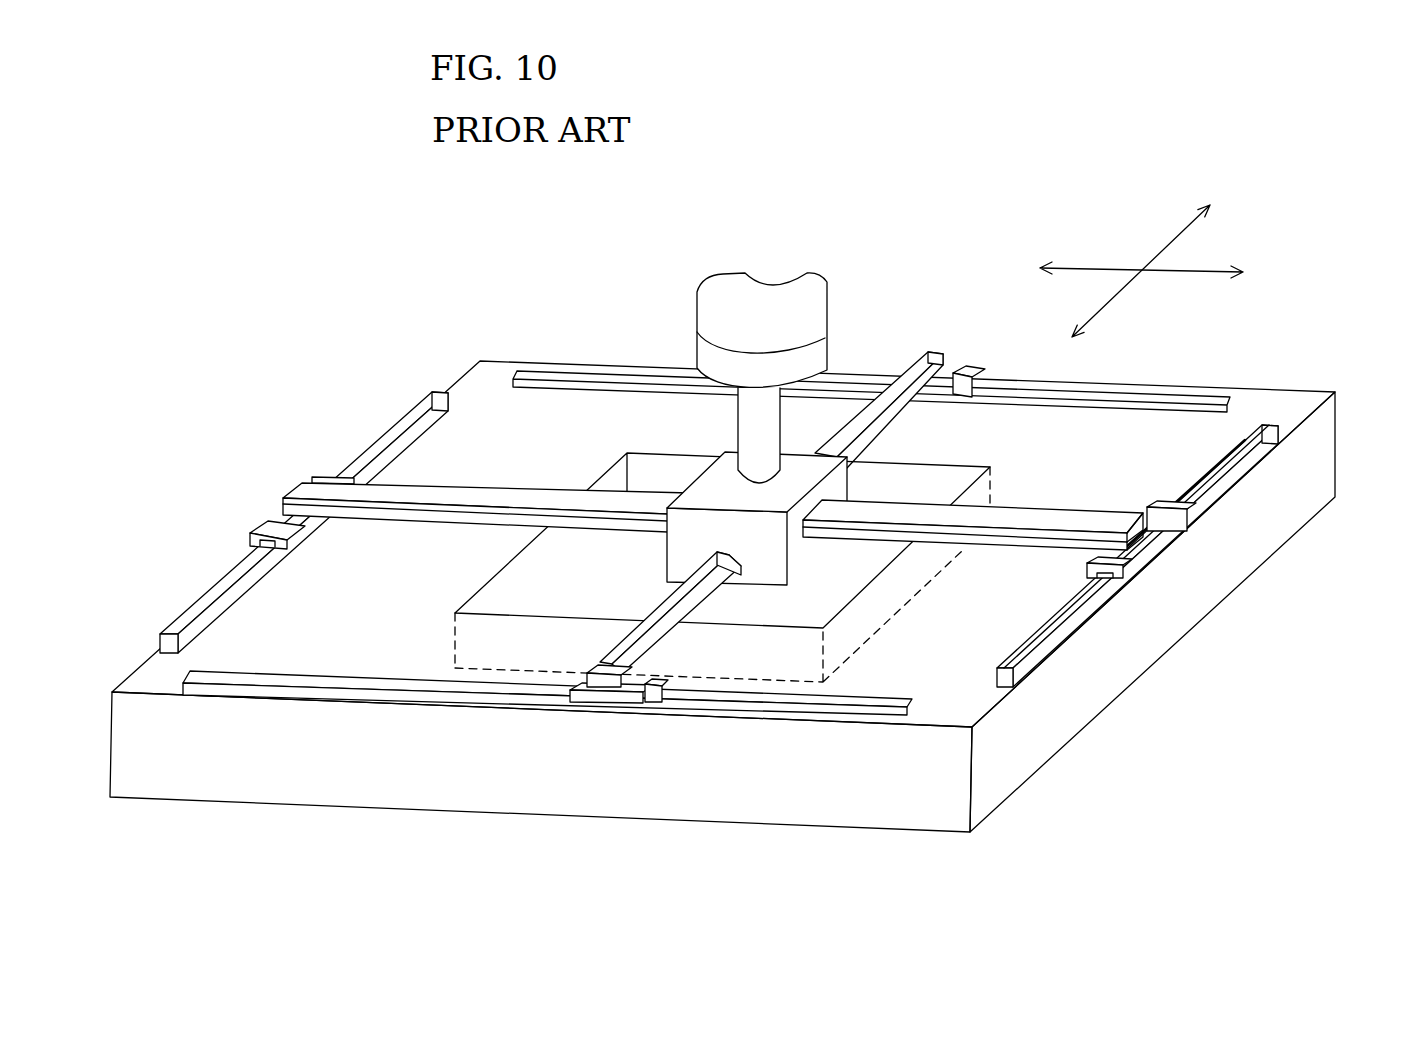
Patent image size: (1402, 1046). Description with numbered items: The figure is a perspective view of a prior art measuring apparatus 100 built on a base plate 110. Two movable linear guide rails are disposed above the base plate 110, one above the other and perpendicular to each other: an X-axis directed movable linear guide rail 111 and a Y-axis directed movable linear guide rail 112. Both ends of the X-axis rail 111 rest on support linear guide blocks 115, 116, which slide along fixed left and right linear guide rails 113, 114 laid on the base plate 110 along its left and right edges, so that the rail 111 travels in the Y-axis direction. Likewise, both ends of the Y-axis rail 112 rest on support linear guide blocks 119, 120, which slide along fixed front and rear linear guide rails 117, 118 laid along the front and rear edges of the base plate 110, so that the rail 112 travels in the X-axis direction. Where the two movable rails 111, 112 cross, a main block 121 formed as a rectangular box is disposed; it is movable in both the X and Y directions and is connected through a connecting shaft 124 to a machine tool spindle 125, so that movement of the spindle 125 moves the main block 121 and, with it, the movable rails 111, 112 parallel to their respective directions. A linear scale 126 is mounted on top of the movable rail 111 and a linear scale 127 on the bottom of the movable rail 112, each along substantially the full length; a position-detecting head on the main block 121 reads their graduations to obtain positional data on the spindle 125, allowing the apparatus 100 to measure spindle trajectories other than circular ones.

The measuring apparatus 100 is at (362, 263).
The base plate 110 is at (400, 768).
The X-axis directed movable linear guide rail 111 is at (1066, 545).
The Y-axis directed movable linear guide rail 112 is at (603, 650).
The fixed left linear guide rail 113 is at (212, 592).
The fixed right linear guide rail 114 is at (1023, 652).
The support linear guide block 115 is at (270, 523).
The support linear guide block 116 is at (1160, 540).
The fixed front linear guide rail 117 is at (322, 682).
The fixed rear linear guide rail 118 is at (557, 373).
The support linear guide block 119 is at (603, 697).
The support linear guide block 120 is at (961, 372).
The main block 121 is at (800, 550).
The connecting shaft 124 is at (733, 413).
The machine tool spindle 125 is at (829, 297).
The linear scale 126 is at (1110, 517).
The linear scale 127 is at (663, 633).